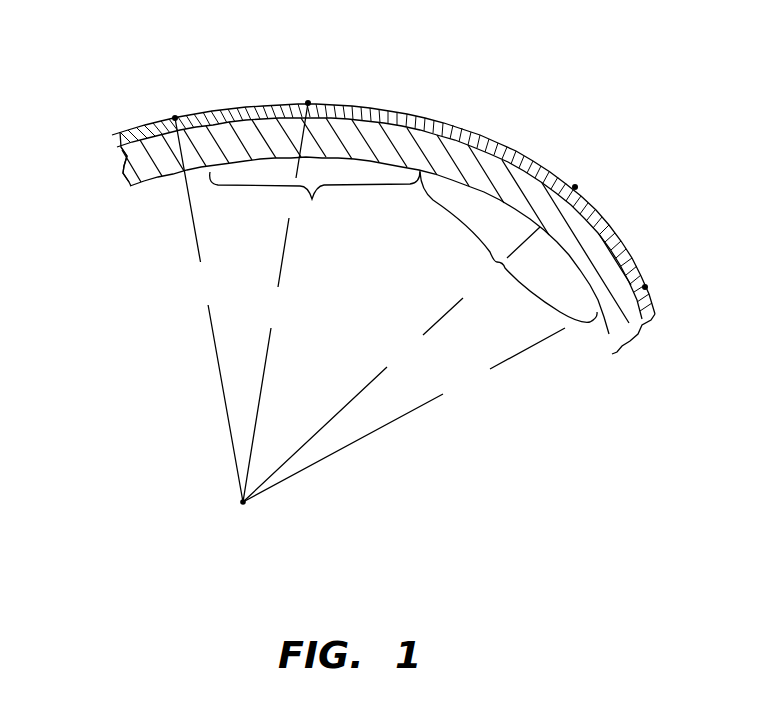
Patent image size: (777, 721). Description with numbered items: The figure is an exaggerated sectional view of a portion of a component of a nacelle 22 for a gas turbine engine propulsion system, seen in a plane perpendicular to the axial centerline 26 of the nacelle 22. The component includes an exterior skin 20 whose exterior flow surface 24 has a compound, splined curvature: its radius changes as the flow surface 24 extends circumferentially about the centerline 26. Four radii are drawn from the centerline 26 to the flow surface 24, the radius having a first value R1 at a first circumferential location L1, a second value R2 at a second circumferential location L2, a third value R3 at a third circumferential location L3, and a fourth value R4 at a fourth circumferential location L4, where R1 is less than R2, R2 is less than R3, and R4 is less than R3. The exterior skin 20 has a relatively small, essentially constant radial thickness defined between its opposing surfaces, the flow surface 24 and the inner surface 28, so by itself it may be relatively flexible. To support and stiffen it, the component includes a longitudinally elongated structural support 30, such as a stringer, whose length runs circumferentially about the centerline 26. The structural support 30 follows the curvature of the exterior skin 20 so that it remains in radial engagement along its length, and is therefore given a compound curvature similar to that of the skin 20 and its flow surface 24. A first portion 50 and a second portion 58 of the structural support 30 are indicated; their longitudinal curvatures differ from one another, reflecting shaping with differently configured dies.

The exterior skin 20 is at (112, 141).
The nacelle 22 is at (598, 90).
The exterior flow surface 24 is at (143, 130).
The axial centerline 26 is at (243, 502).
The surface 28 is at (150, 187).
The structural support 30 is at (110, 168).
The first portion 50 is at (315, 203).
The second portion 58 is at (508, 247).
The first circumferential location L1 is at (175, 118).
The second circumferential location L2 is at (308, 103).
The third circumferential location L3 is at (575, 187).
The fourth circumferential location L4 is at (645, 287).
The first value of radius R1 is at (209, 310).
The second value of radius R2 is at (275, 302).
The third value of radius R3 is at (391, 364).
The fourth value of radius R4 is at (404, 415).